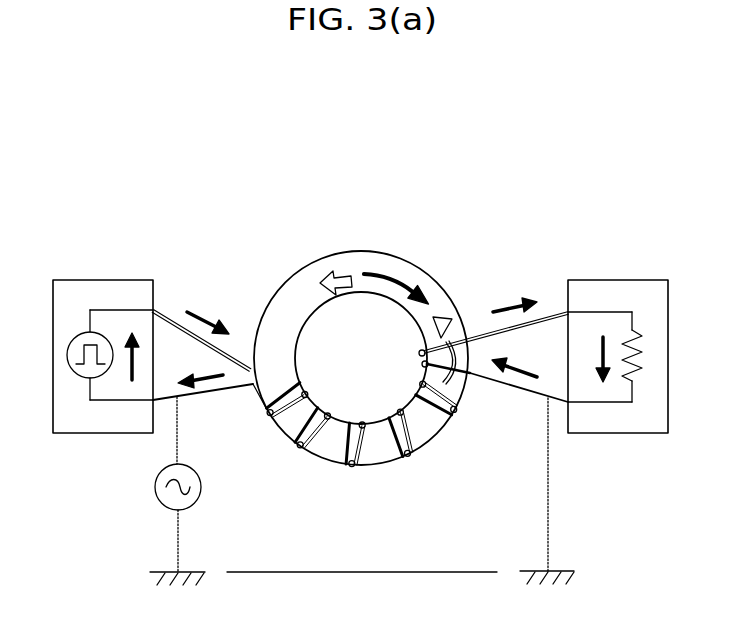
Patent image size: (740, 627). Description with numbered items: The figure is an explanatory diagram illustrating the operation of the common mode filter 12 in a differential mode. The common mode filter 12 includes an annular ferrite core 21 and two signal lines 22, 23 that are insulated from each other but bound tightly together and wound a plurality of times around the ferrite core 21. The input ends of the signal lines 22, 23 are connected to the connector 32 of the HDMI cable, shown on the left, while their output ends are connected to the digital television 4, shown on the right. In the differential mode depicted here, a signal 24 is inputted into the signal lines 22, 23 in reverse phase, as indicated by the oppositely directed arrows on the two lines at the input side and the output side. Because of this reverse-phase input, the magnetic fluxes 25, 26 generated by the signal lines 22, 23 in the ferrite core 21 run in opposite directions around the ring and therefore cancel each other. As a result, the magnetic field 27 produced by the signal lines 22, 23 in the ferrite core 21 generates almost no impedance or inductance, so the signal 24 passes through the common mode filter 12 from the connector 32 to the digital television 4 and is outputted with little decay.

The common mode filter 12 is at (487, 185).
The connector 32 is at (100, 273).
The digital television 4 is at (600, 277).
The annular ferrite core 21 is at (270, 277).
The signal line 22 is at (163, 316).
The magnetic flux 25 is at (450, 323).
The signal line 23 is at (240, 388).
The signal 24 is at (200, 318).
The magnetic flux 26 is at (388, 278).
The magnetic field 27 is at (337, 273).